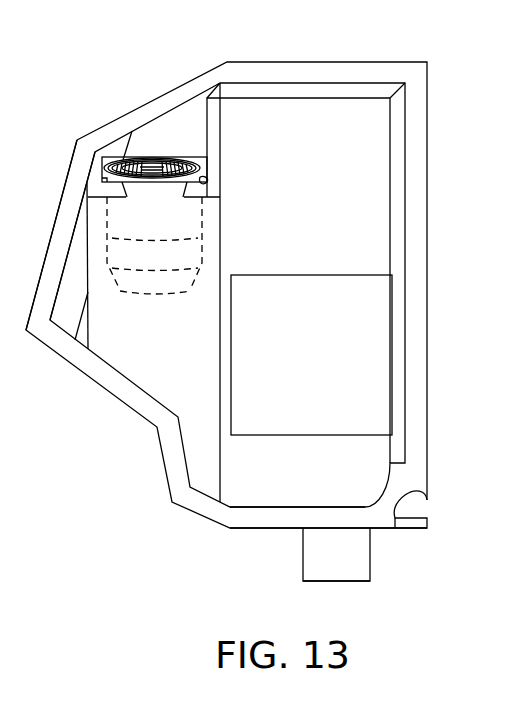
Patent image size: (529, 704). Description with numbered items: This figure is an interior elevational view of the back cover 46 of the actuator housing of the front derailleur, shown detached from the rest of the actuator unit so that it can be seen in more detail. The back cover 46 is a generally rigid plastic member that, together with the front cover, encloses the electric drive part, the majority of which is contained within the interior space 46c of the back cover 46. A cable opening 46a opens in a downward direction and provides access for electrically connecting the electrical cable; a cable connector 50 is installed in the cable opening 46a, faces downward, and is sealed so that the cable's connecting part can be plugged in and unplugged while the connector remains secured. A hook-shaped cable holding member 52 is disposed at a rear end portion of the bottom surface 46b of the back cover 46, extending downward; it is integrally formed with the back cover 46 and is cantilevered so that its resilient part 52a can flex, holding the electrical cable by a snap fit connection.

The back cover 46 is at (470, 95).
The cable opening 46a is at (207, 183).
The bottom surface 46b is at (265, 530).
The interior space 46c is at (148, 342).
The cable connector 50 is at (111, 162).
The cable holding member 52 is at (371, 556).
The resilient part 52a is at (343, 582).